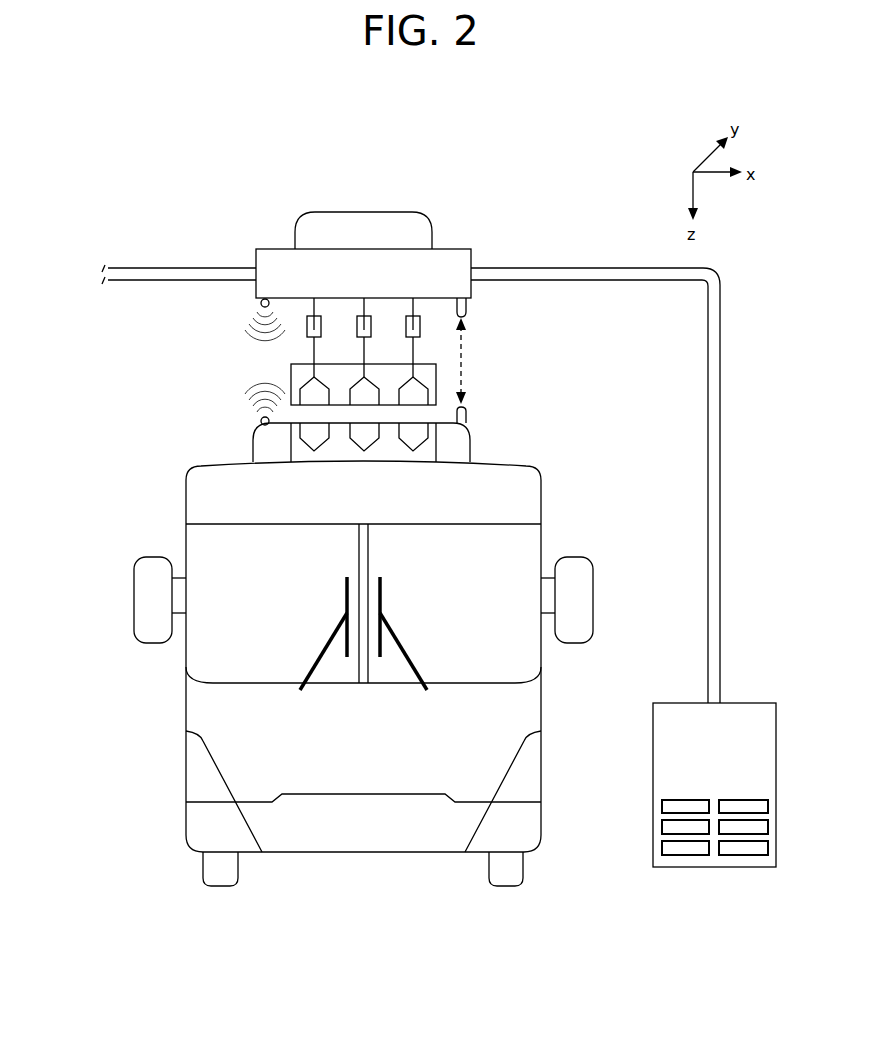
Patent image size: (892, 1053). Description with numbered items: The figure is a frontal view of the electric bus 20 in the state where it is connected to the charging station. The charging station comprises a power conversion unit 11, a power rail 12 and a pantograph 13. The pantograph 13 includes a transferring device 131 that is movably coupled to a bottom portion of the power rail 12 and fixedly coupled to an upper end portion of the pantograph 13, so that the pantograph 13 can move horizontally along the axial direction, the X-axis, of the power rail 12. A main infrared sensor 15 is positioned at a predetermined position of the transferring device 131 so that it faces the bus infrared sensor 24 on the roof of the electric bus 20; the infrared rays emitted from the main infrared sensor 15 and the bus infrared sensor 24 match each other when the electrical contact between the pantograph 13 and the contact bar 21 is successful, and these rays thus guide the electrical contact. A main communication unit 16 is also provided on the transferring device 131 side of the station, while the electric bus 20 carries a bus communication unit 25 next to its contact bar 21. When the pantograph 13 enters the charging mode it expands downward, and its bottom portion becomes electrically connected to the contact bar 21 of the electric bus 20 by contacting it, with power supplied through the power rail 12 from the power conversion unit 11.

The transferring device 131 is at (465, 249).
The power rail 12 is at (720, 484).
The power conversion unit 11 is at (758, 703).
The main communication unit 16 is at (260, 303).
The main infrared sensor 15 is at (470, 305).
The pantograph 13 is at (291, 375).
The bus communication unit 25 is at (258, 421).
The bus infrared sensor 24 is at (470, 414).
The contact bar 21 is at (430, 450).
The electric bus 20 is at (160, 789).